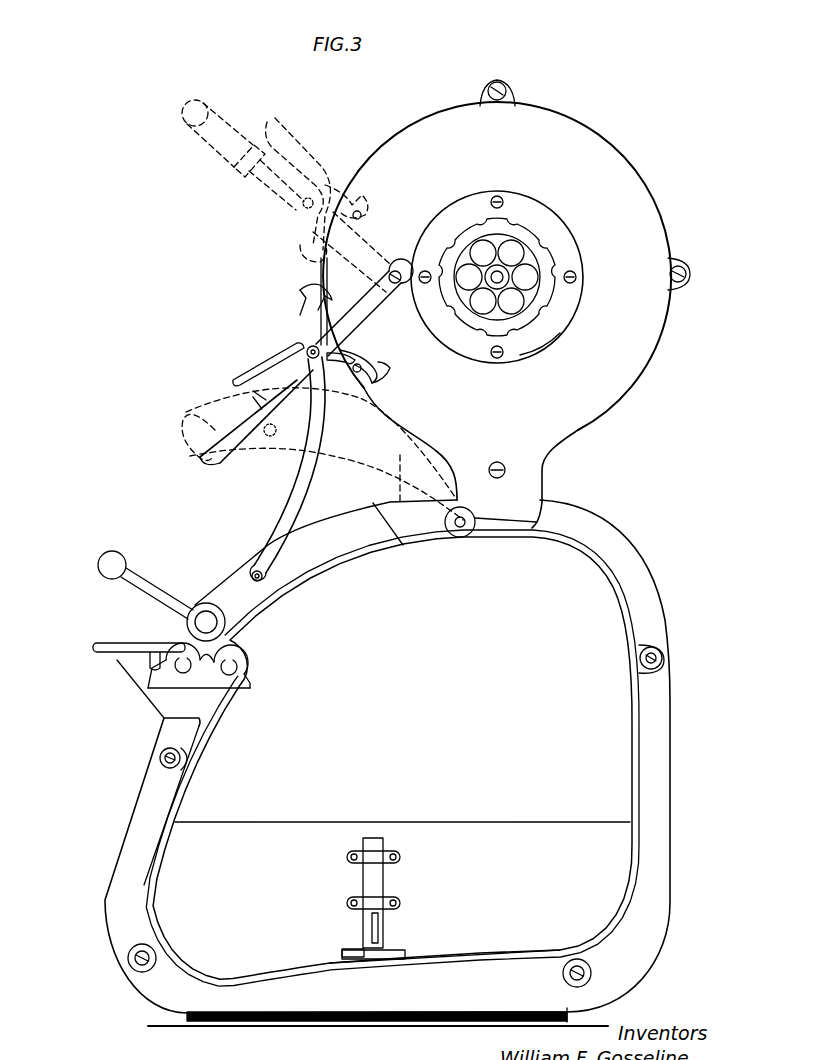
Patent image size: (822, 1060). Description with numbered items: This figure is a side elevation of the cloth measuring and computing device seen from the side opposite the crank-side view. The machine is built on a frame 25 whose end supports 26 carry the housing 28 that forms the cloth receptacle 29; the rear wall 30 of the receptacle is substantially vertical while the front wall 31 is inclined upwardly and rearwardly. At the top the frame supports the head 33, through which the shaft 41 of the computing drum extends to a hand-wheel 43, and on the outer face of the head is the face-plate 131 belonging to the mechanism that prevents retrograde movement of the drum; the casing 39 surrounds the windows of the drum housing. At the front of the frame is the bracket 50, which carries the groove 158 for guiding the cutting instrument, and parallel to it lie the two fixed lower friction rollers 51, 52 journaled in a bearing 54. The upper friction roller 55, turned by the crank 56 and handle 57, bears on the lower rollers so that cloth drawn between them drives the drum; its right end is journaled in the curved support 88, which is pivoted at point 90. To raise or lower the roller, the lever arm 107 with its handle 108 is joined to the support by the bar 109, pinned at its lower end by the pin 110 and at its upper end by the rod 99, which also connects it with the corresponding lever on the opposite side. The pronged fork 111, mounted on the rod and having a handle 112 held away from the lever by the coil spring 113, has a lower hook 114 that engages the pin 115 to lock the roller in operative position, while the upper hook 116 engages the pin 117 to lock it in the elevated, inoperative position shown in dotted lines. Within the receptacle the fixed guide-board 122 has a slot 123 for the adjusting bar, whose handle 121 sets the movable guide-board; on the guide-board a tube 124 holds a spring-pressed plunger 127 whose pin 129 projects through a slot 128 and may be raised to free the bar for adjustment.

The frame 25 is at (378, 1029).
The end supports 26 is at (670, 843).
The housing 28 is at (493, 944).
The cloth receptacle 29 is at (402, 797).
The rear wall 30 is at (632, 757).
The front wall 31 is at (190, 782).
The head 33 is at (506, 304).
The casing 39 is at (328, 274).
The shaft 41 is at (519, 272).
The hand-wheel 43 is at (556, 302).
The bracket 50 is at (113, 645).
The friction roller 51 is at (165, 672).
The friction roller 52 is at (250, 666).
The bearing 54 is at (228, 684).
The upper friction roller 55 is at (228, 636).
The crank 56 is at (163, 594).
The handle 57 is at (121, 558).
The curved support 88 is at (326, 552).
The pivot point 90 is at (460, 537).
The rod 99 is at (307, 343).
The lever arm 107 is at (398, 300).
The handle 108 is at (210, 460).
The bar 109 is at (303, 493).
The pin 110 is at (252, 573).
The pronged fork 111 is at (353, 350).
The handle 112 is at (270, 347).
The coil spring 113 is at (262, 372).
The lower hook 114 is at (376, 372).
The pin 115 is at (357, 372).
The upper hook 116 is at (302, 294).
The pin 117 is at (362, 214).
The handle 121 is at (403, 951).
The fixed guide-board 122 is at (520, 885).
The slot 123 is at (355, 950).
The tube 124 is at (383, 870).
The plunger 127 is at (374, 950).
The slot 128 is at (387, 920).
The pin 129 is at (390, 930).
The face-plate 131 is at (557, 252).
The groove 158 is at (140, 650).